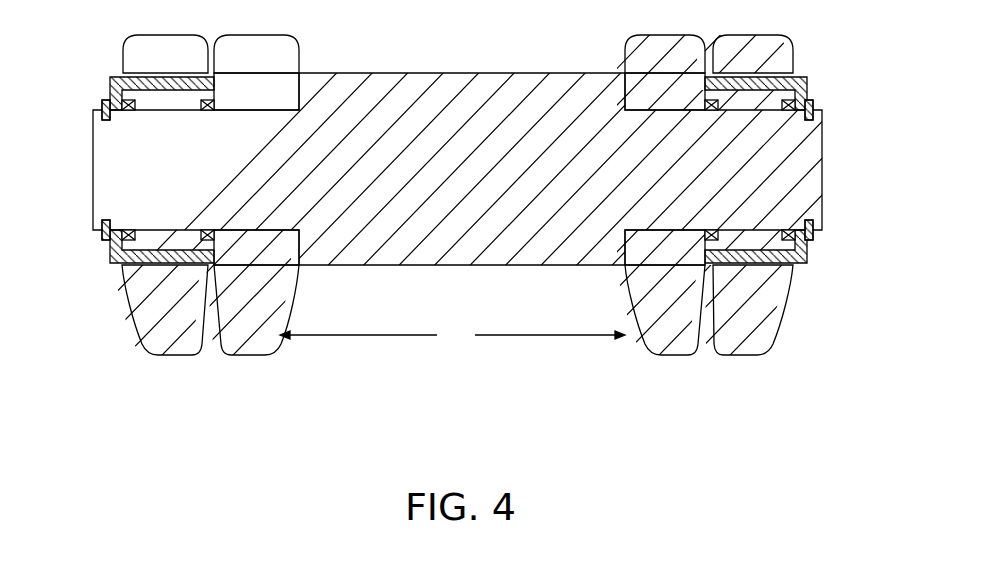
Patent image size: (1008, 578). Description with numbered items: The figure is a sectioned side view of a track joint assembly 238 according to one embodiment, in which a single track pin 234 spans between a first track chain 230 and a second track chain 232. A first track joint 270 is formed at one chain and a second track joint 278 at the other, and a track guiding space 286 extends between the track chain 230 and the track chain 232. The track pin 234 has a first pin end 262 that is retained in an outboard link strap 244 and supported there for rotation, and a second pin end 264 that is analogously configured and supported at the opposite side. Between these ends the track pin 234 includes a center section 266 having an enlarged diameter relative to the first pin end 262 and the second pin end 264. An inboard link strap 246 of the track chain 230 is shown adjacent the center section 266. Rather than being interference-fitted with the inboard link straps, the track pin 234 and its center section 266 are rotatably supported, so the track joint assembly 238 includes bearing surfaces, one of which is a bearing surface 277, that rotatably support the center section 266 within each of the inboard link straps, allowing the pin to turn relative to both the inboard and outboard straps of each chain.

The first track chain 230 is at (764, 371).
The second track chain 232 is at (257, 369).
The track pin 234 is at (453, 73).
The track joint assembly 238 is at (841, 68).
The outboard link strap 244 is at (767, 328).
The inboard link strap 246 is at (657, 340).
The first pin end 262 is at (812, 152).
The second pin end 264 is at (103, 150).
The center section 266 is at (560, 82).
The first track joint 270 is at (811, 288).
The bearing surface 277 is at (653, 238).
The second track joint 278 is at (110, 284).
The track guiding space 286 is at (452, 336).